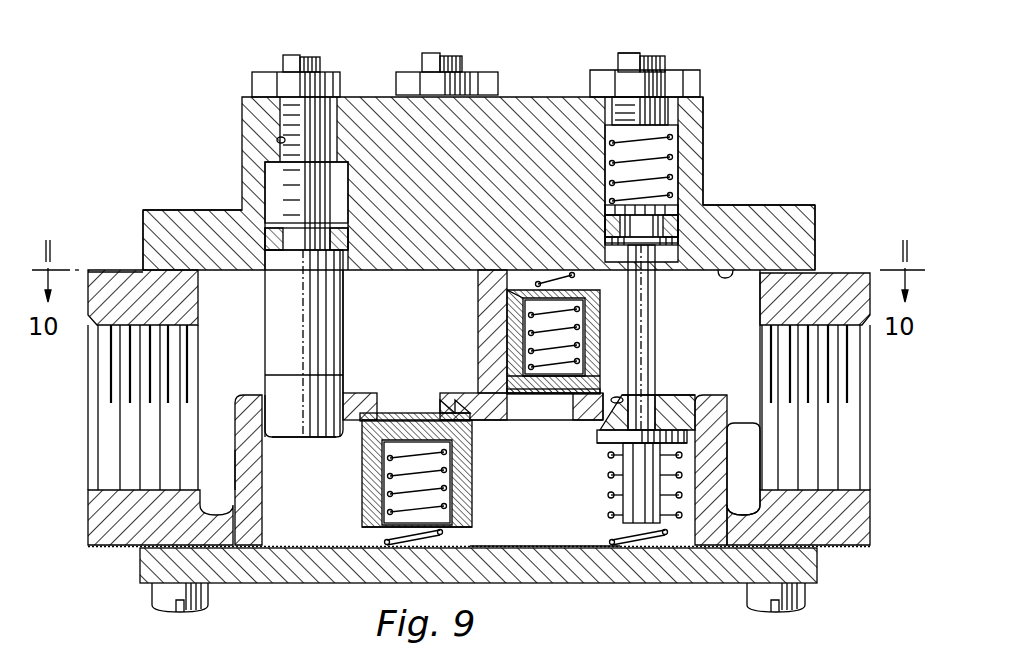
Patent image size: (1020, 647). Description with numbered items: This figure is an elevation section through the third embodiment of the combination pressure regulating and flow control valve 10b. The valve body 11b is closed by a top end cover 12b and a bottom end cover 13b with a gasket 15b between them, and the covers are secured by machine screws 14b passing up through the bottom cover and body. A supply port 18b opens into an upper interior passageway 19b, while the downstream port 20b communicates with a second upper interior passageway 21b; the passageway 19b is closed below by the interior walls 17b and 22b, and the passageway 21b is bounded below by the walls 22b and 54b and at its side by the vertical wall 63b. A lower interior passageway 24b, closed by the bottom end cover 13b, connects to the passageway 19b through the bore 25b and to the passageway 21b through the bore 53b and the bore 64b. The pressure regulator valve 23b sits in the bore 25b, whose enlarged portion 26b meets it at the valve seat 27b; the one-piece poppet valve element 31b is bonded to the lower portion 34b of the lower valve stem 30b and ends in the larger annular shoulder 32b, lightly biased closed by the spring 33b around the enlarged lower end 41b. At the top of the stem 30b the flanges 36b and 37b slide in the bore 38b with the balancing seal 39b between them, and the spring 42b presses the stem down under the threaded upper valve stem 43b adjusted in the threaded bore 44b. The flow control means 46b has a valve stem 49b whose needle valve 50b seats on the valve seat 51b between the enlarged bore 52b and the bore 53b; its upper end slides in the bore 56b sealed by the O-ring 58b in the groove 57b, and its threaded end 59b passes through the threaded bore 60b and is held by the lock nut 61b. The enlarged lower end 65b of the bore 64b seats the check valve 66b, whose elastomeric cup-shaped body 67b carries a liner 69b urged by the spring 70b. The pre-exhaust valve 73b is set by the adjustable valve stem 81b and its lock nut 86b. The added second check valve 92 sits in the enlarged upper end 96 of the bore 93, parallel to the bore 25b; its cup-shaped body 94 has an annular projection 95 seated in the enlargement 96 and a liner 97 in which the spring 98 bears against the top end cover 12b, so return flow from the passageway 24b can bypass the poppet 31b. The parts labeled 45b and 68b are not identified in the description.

The combination pressure regulating and flow control valve 10b is at (234, 162).
The valve body 11b is at (828, 285).
The top end cover 12b is at (690, 115).
The bottom end cover 13b is at (632, 552).
The machine screws 14b is at (160, 597).
The gasket 15b is at (142, 268).
The valve body interior wall 17b is at (735, 462).
The supply or upstream port 18b is at (848, 490).
The upper interior passageway 19b is at (737, 220).
The outlet or downstream port 20b is at (109, 487).
The upper interior passageway 21b is at (213, 266).
The valve body interior wall 22b is at (492, 424).
The pressure regulator valve 23b is at (619, 46).
The lower interior passageway 24b is at (538, 545).
The bore or passageway 25b is at (662, 398).
The enlarged bore portion 26b is at (723, 402).
The valve seat 27b is at (617, 395).
The lower valve stem 30b is at (646, 313).
The poppet valve element 31b is at (662, 396).
The annular shoulder 32b is at (597, 438).
The spring 33b is at (620, 490).
The lower portion of valve stem 34b is at (657, 444).
The annular shoulder or flange 36b is at (604, 240).
The annular shoulder or flange 37b is at (604, 206).
The bore 38b is at (675, 168).
The balancing seal means 39b is at (603, 224).
The enlarged lower end of valve stem 41b is at (640, 484).
The spring 42b is at (652, 158).
The threaded upper valve stem 43b is at (632, 58).
The reduced diameter threaded bore 44b is at (614, 100).
The lock nut 45b is at (688, 84).
The adjustable fluid flow control means 46b is at (257, 58).
The valve stem 49b is at (276, 315).
The needle valve 50b is at (329, 438).
The valve seat 51b is at (278, 392).
The enlarged diameter bore 52b is at (352, 385).
The bore or passageway 53b is at (272, 414).
The valve body interior wall 54b is at (250, 473).
The bore 56b is at (353, 181).
The peripheral groove 57b is at (272, 258).
The O-ring seal 58b is at (348, 242).
The threaded upper end portion 59b is at (287, 105).
The threaded bore 60b is at (277, 140).
The lock nut 61b is at (352, 70).
The vertical valve body interior wall 63b is at (483, 282).
The bore or passageway 64b is at (448, 413).
The enlarged lower end of bore 65b is at (448, 410).
The check valve means 66b is at (352, 512).
The cup-shaped valve body 67b is at (462, 473).
The plate 68b is at (388, 413).
The cup-shaped liner 69b is at (382, 524).
The spring 70b is at (445, 536).
The pre-exhaust valve 73b is at (482, 62).
The adjustable valve stem 81b is at (426, 53).
The lock nut 86b is at (498, 86).
The second check valve 92 is at (595, 318).
The bore or passageway 93 is at (578, 412).
The cup-shaped valve body 94 is at (512, 312).
The annular axially extended projection 95 is at (542, 396).
The enlarged upper end of passageway 96 is at (591, 368).
The cup-shaped liner 97 is at (587, 342).
The spring means 98 is at (575, 288).